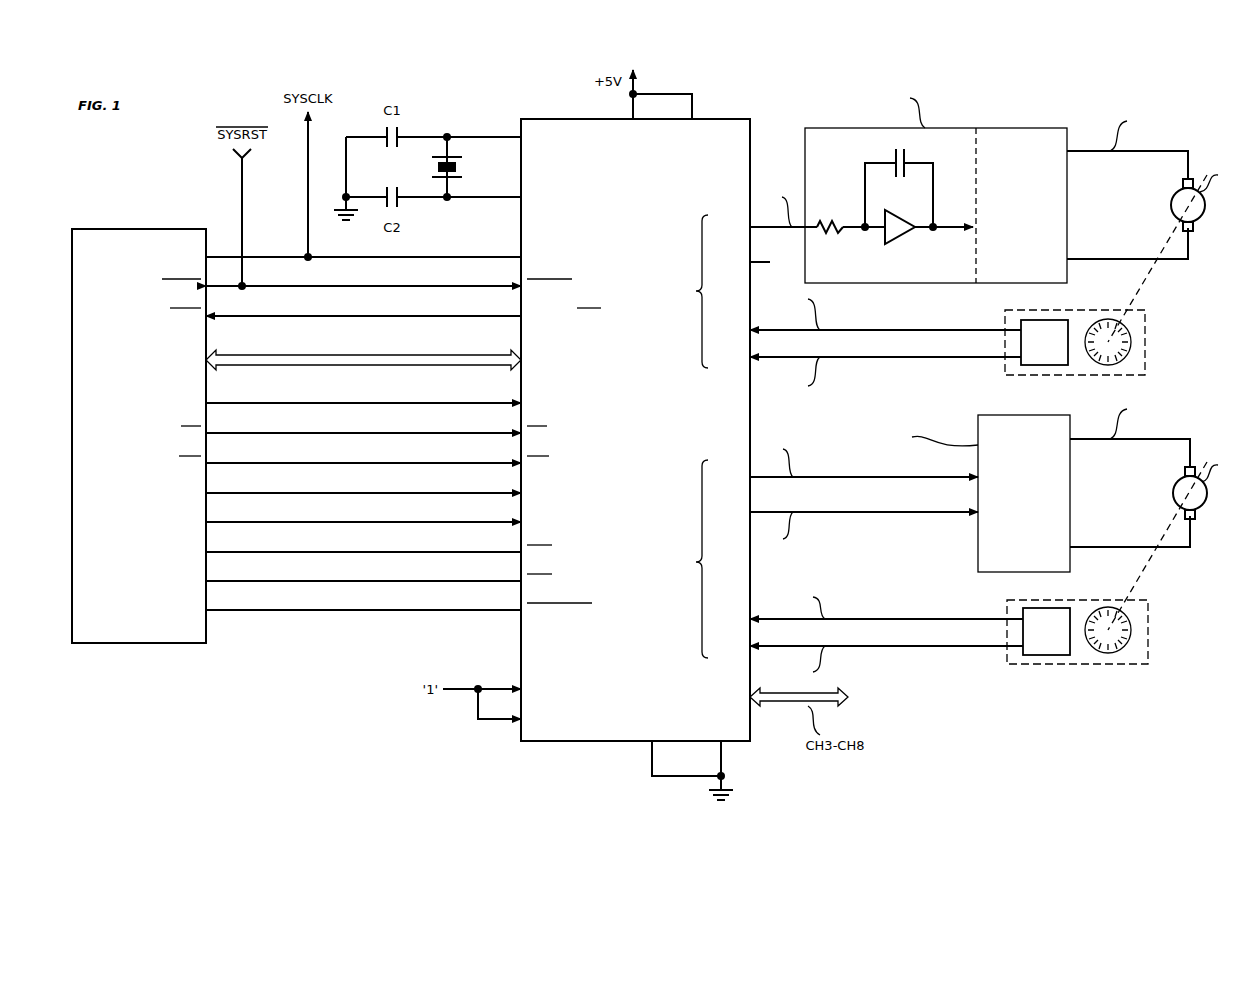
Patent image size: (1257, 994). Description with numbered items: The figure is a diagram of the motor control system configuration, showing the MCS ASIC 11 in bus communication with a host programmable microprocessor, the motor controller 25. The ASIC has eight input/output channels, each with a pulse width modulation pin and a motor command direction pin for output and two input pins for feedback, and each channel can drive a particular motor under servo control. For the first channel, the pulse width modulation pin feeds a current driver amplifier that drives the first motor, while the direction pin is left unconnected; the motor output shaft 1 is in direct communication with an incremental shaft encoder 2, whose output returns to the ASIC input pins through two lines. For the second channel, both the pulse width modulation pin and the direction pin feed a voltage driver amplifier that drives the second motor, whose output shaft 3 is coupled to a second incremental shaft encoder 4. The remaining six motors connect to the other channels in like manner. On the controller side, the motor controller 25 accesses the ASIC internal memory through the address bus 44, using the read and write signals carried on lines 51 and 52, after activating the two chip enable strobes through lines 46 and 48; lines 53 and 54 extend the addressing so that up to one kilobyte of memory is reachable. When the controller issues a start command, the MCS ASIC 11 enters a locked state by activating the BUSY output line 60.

The motor controller 25 is at (138, 229).
The MCS ASIC 11 is at (556, 119).
The BUSY output line 60 is at (315, 318).
The address bus 44 is at (366, 355).
The RD line 51 is at (366, 433).
The WR line 52 is at (366, 463).
The address line 53 is at (366, 493).
The address line 54 is at (366, 522).
The CE1 enable strobe line 46 is at (366, 552).
The CE2 enable strobe line 48 is at (366, 581).
The motor output shaft 1 is at (1145, 292).
The incremental shaft encoder 2 is at (1145, 335).
The motor output shaft 3 is at (1145, 578).
The incremental shaft encoder 4 is at (1148, 621).